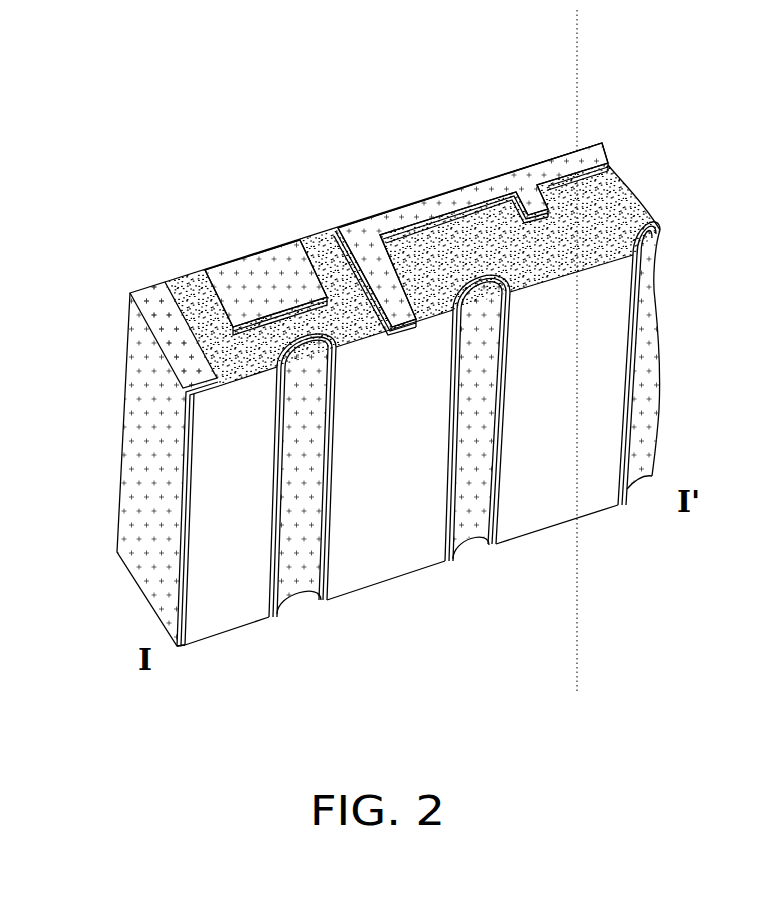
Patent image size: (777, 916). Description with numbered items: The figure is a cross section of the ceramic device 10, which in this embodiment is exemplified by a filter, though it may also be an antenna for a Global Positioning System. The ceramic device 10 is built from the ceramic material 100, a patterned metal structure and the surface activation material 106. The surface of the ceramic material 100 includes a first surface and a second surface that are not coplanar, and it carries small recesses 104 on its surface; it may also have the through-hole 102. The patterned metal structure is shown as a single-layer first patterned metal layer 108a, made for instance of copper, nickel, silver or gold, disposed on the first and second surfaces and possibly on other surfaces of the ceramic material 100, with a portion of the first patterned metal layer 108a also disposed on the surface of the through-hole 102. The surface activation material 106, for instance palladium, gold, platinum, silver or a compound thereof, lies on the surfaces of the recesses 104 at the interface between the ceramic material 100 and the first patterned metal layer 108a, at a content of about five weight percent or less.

The ceramic device 10 is at (580, 100).
The ceramic material 100 is at (302, 245).
The through-hole 102 is at (307, 390).
The recesses 104 is at (183, 298).
The surface activation material 106 is at (205, 392).
The first patterned metal layer 108a is at (181, 363).